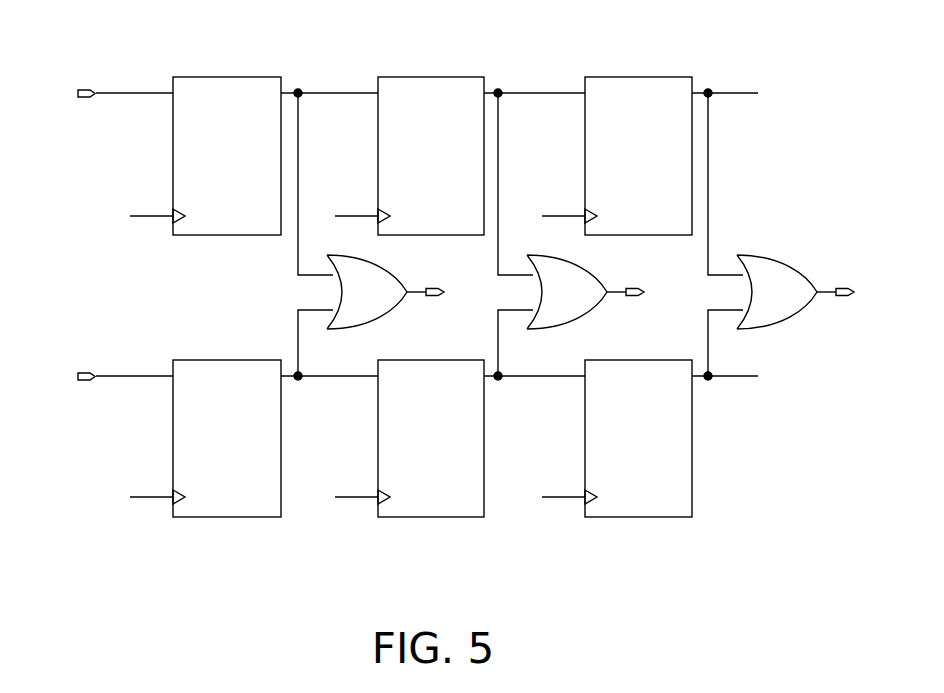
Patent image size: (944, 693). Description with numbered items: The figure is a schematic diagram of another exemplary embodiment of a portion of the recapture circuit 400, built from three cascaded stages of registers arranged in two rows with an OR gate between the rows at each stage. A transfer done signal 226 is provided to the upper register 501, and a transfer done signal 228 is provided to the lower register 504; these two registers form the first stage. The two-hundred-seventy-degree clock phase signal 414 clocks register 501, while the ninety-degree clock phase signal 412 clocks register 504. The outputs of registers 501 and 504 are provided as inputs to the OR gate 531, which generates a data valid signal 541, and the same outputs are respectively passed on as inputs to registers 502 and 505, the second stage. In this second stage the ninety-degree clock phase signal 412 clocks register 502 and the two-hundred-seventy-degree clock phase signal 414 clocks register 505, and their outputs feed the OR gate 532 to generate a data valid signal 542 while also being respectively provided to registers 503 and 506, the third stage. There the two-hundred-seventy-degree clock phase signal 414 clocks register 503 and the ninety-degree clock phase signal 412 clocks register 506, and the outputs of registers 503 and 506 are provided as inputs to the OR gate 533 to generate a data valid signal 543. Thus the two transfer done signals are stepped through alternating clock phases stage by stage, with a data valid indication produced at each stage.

The recapture circuit 400 is at (752, 54).
The transfer done signal 226 is at (75, 102).
The transfer done signal 228 is at (75, 385).
The register 501 is at (214, 173).
The register 502 is at (418, 173).
The register 503 is at (625, 173).
The register 504 is at (214, 456).
The register 505 is at (418, 456).
The register 506 is at (625, 456).
The clock phase 90 signal 412 is at (362, 216).
The clock phase 270 signal 414 is at (157, 216).
The OR gate 531 is at (364, 302).
The OR gate 532 is at (564, 302).
The OR gate 533 is at (774, 302).
The data valid signal 541 is at (456, 318).
The data valid signal 542 is at (656, 318).
The data valid signal 543 is at (866, 318).